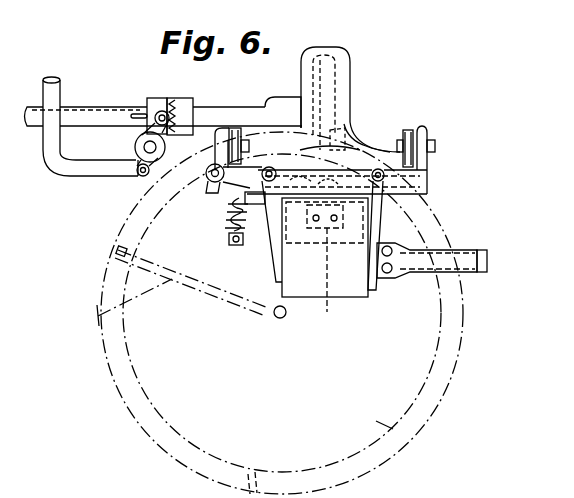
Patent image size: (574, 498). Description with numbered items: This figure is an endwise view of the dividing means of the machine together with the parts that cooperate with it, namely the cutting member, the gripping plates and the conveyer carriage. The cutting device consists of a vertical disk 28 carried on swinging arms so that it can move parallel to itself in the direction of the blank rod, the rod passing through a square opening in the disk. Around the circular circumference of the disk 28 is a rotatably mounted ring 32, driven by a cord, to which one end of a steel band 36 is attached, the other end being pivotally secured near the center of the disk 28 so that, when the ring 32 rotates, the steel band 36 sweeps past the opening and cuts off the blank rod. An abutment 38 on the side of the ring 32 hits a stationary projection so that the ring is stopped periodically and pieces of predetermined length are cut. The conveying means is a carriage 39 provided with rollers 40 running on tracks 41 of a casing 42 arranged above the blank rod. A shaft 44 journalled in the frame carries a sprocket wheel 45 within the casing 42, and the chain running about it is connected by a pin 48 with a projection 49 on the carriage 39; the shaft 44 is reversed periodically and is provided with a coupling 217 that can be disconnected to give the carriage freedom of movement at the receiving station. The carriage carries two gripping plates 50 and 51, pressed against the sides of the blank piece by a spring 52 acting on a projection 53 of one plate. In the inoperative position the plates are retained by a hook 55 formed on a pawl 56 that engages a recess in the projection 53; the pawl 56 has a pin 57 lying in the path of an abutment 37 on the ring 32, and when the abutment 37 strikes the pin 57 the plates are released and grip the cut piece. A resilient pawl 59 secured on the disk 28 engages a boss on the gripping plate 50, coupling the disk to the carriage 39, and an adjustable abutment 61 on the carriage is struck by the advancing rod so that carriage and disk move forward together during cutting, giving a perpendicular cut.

The disk 28 is at (398, 433).
The ring 32 is at (455, 392).
The steel band 36 is at (172, 289).
The abutment 37 is at (118, 218).
The abutment 38 is at (181, 444).
The carriage 39 is at (240, 132).
The rollers 40 is at (428, 127).
The tracks 41 is at (414, 166).
The casing 42 is at (350, 70).
The shaft 44 is at (107, 113).
The sprocket wheel 45 is at (322, 52).
The pin 48 is at (355, 126).
The projection 49 is at (392, 122).
The gripping plate 50 is at (377, 233).
The gripping plate 51 is at (275, 268).
The spring 52 is at (231, 240).
The projection 53 is at (226, 214).
The hook 55 is at (205, 188).
The pawl 56 is at (214, 160).
The pin 57 is at (233, 127).
The resilient pawl 59 is at (488, 262).
The abutment 61 is at (322, 282).
The coupling 217 is at (180, 99).